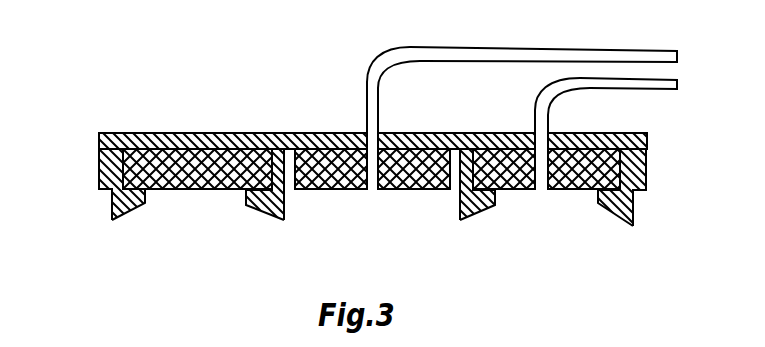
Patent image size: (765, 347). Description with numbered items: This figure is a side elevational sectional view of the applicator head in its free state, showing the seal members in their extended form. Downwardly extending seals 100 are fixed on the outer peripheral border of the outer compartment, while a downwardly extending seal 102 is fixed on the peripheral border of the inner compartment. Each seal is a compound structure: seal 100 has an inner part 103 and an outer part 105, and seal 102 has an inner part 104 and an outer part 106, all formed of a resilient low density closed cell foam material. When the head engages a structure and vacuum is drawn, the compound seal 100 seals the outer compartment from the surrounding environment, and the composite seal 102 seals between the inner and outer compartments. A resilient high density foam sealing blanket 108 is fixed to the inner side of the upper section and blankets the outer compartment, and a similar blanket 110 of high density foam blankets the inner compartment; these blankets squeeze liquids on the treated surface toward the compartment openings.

The seal 100 is at (110, 200).
The seal 102 is at (285, 212).
The inner part 103 is at (138, 205).
The inner part 104 is at (251, 205).
The outer part 105 is at (111, 213).
The outer part 106 is at (458, 197).
The sealing blanket 108 is at (233, 160).
The blanket 110 is at (428, 156).